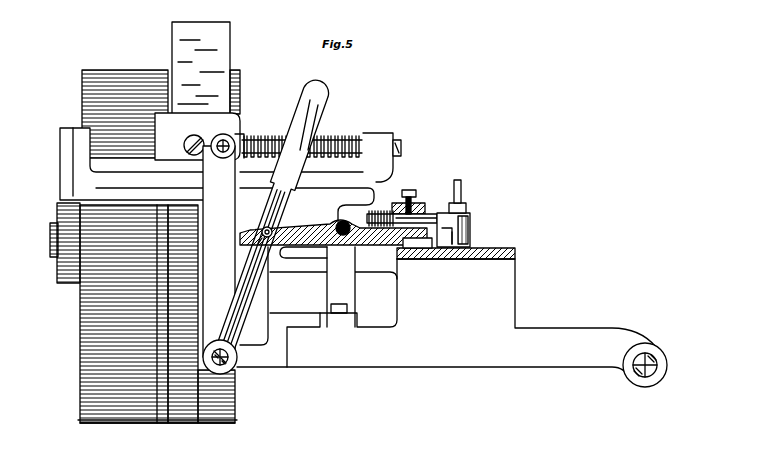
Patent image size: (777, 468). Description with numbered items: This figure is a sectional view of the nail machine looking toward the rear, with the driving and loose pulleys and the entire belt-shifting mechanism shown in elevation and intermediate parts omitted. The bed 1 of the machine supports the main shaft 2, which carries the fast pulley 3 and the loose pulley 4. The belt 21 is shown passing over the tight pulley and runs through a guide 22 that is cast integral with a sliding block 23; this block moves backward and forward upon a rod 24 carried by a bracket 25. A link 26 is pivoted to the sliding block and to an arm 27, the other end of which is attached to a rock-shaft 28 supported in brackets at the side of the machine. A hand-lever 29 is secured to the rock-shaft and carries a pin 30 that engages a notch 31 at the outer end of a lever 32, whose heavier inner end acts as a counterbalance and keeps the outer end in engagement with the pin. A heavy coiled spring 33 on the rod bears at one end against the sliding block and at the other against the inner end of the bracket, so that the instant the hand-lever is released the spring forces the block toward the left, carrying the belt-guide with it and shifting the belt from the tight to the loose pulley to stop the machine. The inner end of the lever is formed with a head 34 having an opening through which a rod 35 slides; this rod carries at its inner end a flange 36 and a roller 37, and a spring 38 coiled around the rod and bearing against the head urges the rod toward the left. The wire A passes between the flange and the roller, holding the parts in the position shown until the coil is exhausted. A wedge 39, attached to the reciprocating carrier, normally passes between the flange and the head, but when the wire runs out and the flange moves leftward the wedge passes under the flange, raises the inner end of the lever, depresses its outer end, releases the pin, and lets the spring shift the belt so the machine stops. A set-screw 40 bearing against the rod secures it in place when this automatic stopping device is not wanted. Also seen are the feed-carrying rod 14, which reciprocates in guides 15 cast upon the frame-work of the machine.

The bed 1 is at (446, 313).
The main shaft 2 is at (56, 240).
The fast pulley 3 is at (236, 390).
The loose pulley 4 is at (85, 312).
The feed-carrying rod 14 is at (640, 373).
The guides 15 is at (666, 368).
The belt 21 is at (204, 222).
The guide 22 is at (197, 136).
The sliding block 23 is at (240, 138).
The rod 24 is at (148, 152).
The bracket 25 is at (226, 175).
The link 26 is at (221, 136).
The arm 27 is at (219, 251).
The rock-shaft 28 is at (237, 358).
The hand-lever 29 is at (271, 219).
The pin 30 is at (267, 227).
The notch 31 is at (262, 244).
The lever 32 is at (314, 227).
The coiled spring 33 is at (338, 134).
The head 34 is at (430, 214).
The rod 35 is at (346, 222).
The flange 36 is at (441, 259).
The roller 37 is at (470, 239).
The spring 38 is at (392, 210).
The wedge 39 is at (421, 256).
The set-screw 40 is at (412, 199).
The wire A is at (452, 246).